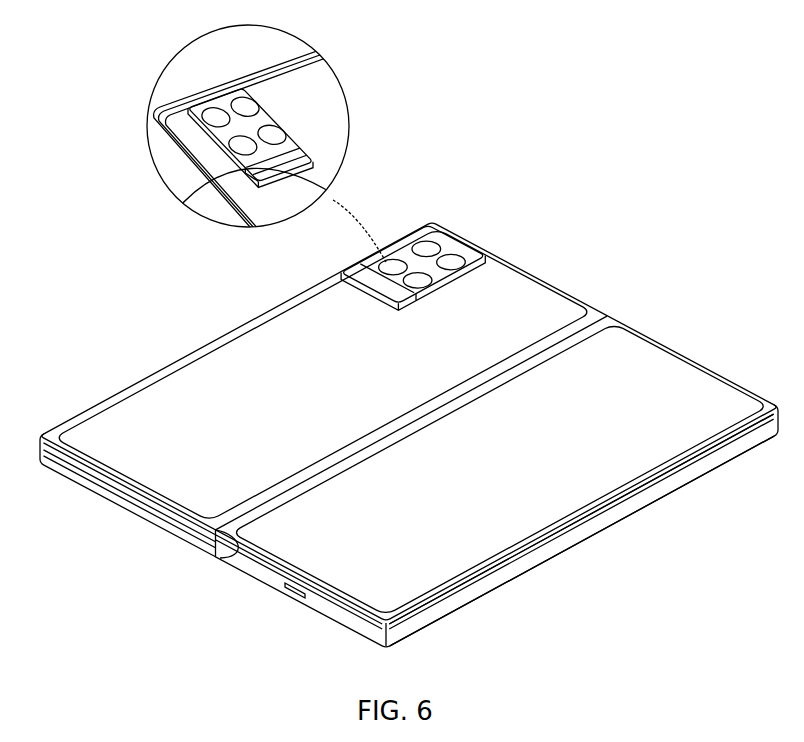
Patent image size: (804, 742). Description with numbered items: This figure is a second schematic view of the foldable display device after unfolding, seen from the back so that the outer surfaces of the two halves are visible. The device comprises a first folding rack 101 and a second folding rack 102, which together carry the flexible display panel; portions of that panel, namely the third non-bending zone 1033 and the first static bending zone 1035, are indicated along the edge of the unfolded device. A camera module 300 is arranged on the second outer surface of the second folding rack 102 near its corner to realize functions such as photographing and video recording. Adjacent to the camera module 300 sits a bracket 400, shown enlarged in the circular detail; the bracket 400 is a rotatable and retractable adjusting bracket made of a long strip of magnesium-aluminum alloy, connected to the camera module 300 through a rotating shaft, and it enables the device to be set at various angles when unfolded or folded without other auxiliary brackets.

The first folding rack 101 is at (238, 548).
The second folding rack 102 is at (518, 303).
The camera module 300 is at (405, 235).
The bracket 400 is at (248, 170).
The third non-bending zone 1033 is at (565, 503).
The first static bending zone 1035 is at (505, 565).